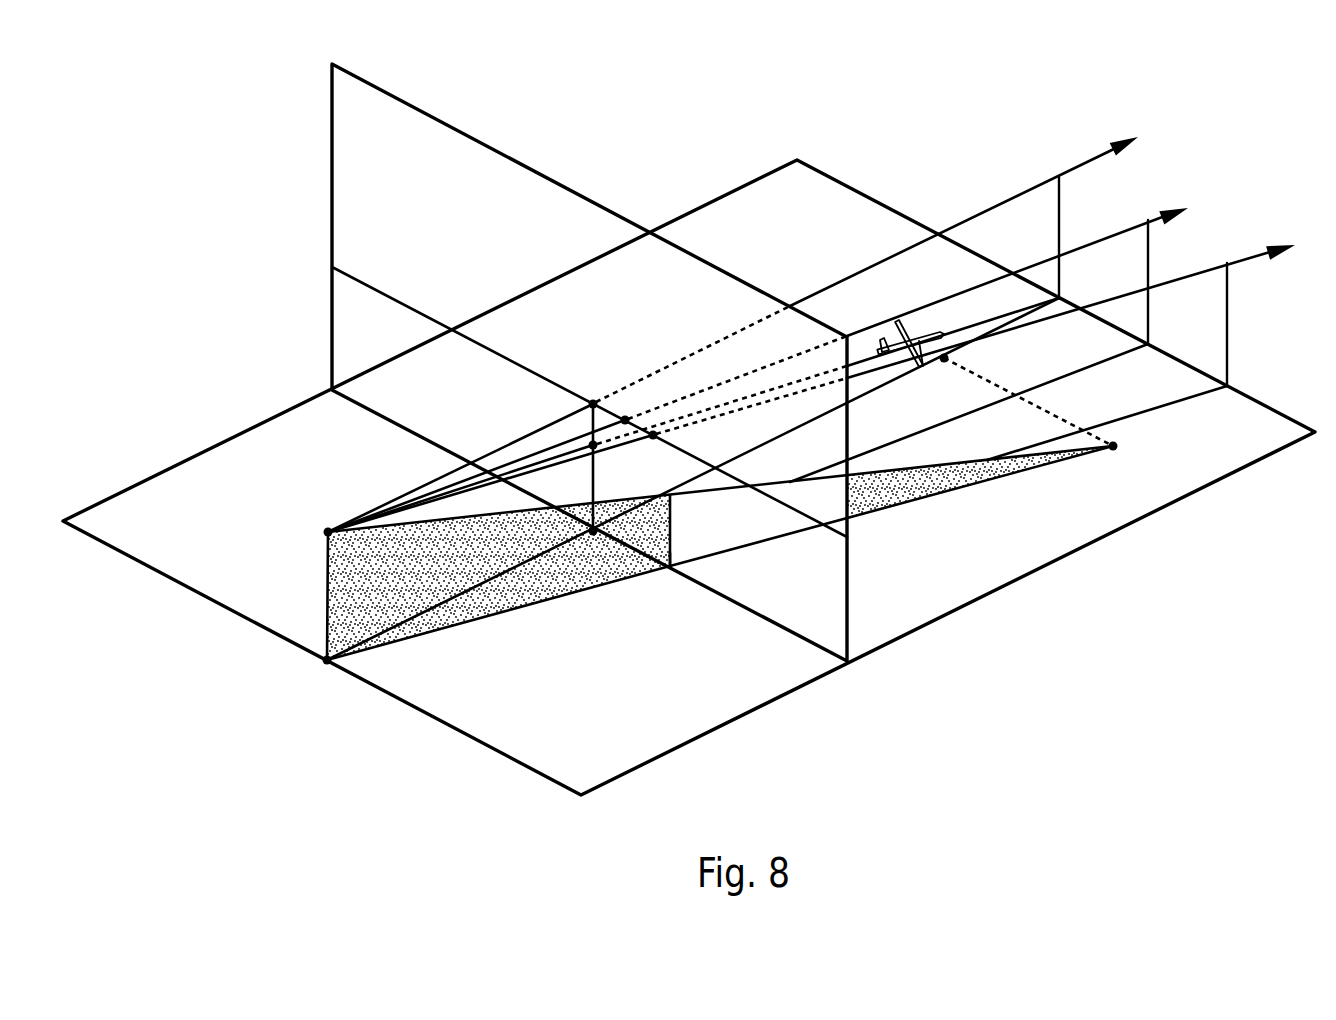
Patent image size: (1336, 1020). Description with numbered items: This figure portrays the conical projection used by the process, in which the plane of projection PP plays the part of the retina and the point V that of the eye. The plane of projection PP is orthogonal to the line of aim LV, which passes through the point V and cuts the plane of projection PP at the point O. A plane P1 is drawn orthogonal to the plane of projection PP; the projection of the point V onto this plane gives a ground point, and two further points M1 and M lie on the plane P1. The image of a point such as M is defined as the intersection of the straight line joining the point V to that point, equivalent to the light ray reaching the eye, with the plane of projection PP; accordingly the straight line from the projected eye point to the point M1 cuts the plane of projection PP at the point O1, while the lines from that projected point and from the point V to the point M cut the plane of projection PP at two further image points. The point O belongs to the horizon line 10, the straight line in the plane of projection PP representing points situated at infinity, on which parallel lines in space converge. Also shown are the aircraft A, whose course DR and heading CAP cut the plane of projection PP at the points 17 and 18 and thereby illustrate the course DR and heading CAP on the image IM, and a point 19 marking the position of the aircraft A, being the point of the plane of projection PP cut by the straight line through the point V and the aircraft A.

The horizon line 10 is at (377, 289).
The point illustrating the course 17 is at (625, 418).
The point illustrating the heading 18 is at (653, 433).
The point illustrating the position of the aircraft 19 is at (592, 445).
The plane of projection PP is at (400, 99).
The image IM is at (578, 247).
The line of aim LV is at (1002, 199).
The course DR is at (1125, 228).
The heading CAP is at (1212, 264).
The aircraft A is at (895, 333).
The point on plane P1 M1 is at (944, 361).
The point M is at (1116, 448).
The eye point V is at (325, 531).
The point of intersection of line of aim with plane of projection O is at (593, 401).
The intersection point of line ΩM1 with plane of projection O1 is at (593, 534).
The plane P1 is at (718, 728).